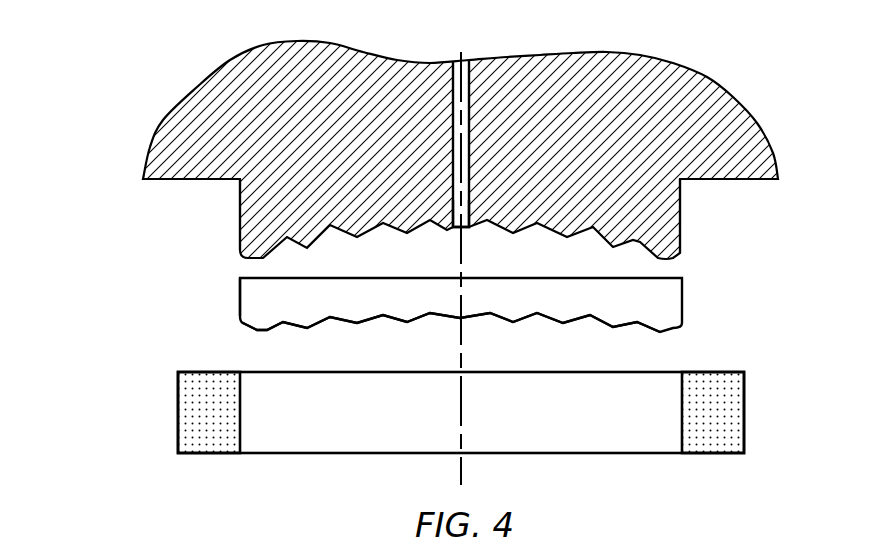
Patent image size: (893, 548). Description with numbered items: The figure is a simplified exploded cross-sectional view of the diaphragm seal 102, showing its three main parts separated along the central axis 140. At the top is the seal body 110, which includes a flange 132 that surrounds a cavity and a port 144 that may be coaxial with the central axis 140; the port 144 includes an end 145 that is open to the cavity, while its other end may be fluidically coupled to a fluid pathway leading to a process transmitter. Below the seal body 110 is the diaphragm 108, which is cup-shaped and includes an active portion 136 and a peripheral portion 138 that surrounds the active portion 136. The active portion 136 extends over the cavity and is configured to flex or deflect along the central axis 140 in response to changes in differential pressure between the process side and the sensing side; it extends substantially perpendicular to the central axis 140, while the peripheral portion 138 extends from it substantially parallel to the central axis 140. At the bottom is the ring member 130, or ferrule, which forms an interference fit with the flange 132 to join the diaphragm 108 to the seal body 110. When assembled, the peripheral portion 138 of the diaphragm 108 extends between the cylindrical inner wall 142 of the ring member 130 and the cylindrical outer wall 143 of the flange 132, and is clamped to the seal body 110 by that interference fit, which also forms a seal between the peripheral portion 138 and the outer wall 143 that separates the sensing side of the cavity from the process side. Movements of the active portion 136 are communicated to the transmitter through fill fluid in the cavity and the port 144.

The diaphragm seal 102 is at (106, 46).
The diaphragm 108 is at (683, 296).
The seal body 110 is at (446, 139).
The ring member 130 is at (186, 402).
The flange 132 is at (680, 216).
The active portion 136 is at (390, 320).
The peripheral portion 138 is at (240, 301).
The central axis 140 is at (463, 424).
The cylindrical inner wall 142 is at (242, 410).
The cylindrical outer wall 143 is at (240, 212).
The port 144 is at (443, 80).
The end 145 is at (467, 200).